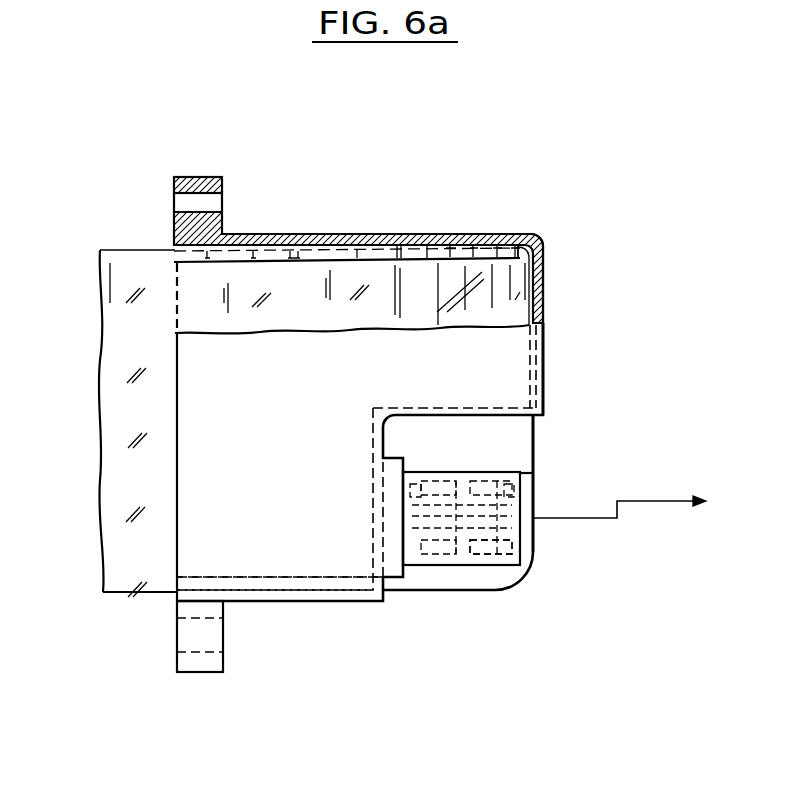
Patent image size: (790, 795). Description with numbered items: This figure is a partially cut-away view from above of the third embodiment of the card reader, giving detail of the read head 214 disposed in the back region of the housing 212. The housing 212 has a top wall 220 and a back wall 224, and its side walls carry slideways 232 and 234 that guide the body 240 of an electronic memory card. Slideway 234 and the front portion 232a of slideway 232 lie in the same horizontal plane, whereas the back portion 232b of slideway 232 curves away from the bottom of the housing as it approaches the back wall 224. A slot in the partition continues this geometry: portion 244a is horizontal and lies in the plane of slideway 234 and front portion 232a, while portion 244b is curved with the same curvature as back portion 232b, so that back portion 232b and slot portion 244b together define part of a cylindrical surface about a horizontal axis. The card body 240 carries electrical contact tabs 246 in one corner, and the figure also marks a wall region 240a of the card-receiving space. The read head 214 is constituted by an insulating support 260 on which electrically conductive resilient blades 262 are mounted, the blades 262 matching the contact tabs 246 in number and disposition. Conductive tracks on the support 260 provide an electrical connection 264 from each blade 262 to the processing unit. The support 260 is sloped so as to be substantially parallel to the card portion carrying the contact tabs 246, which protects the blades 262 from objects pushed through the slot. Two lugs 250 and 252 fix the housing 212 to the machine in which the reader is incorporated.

The housing 212 is at (391, 226).
The read/write head 214 is at (540, 552).
The top wall 220 is at (476, 234).
The back wall 224 is at (547, 274).
The slideway 232 is at (345, 246).
The front portion of slideway 232a is at (289, 255).
The back portion of slideway 232b is at (442, 250).
The slideway 234 is at (282, 583).
The card body 240 is at (115, 518).
The rear wall of glass element 240a is at (535, 428).
The slot portion 244a is at (380, 490).
The slot portion 244b is at (450, 402).
The electrical contact tabs 246 is at (478, 568).
The lug 250 is at (223, 193).
The lug 252 is at (227, 658).
The insulating support 260 is at (442, 566).
The resilient blades 262 is at (533, 473).
The electrical connection 264 is at (645, 501).